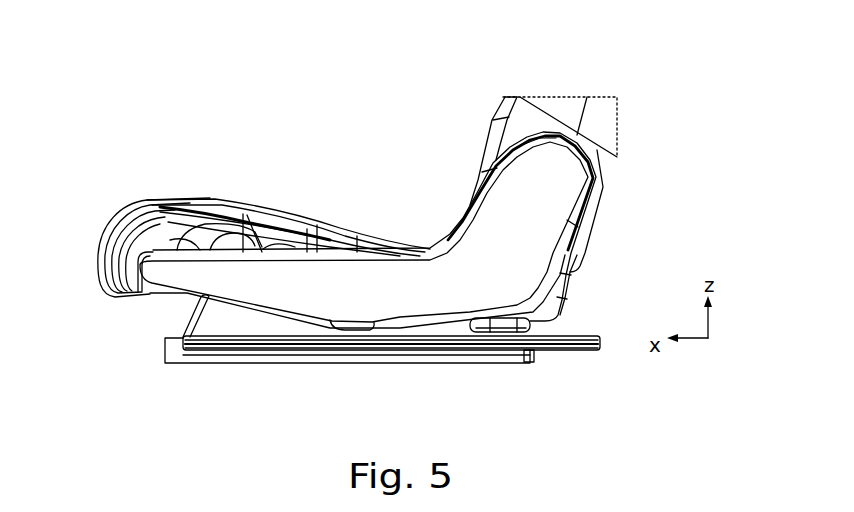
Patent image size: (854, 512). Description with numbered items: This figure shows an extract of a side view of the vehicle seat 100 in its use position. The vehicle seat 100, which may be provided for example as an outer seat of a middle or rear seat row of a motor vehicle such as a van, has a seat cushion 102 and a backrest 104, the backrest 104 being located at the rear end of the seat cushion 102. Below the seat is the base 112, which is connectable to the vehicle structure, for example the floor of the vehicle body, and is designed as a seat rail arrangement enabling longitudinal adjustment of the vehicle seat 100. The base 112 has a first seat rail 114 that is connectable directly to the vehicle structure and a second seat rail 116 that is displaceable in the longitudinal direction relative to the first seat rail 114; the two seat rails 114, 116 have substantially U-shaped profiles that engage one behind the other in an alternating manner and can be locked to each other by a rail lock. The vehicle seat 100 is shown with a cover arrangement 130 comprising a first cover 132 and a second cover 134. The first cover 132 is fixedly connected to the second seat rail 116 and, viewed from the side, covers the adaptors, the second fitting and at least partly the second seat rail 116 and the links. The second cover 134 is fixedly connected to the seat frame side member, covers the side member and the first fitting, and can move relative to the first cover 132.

The vehicle seat 100 is at (228, 103).
The seat cushion 102 is at (131, 199).
The backrest 104 is at (528, 112).
The base 112 is at (152, 352).
The first seat rail 114 is at (529, 351).
The second seat rail 116 is at (596, 341).
The cover arrangement 130 is at (441, 227).
The first cover 132 is at (458, 318).
The second cover 134 is at (572, 228).